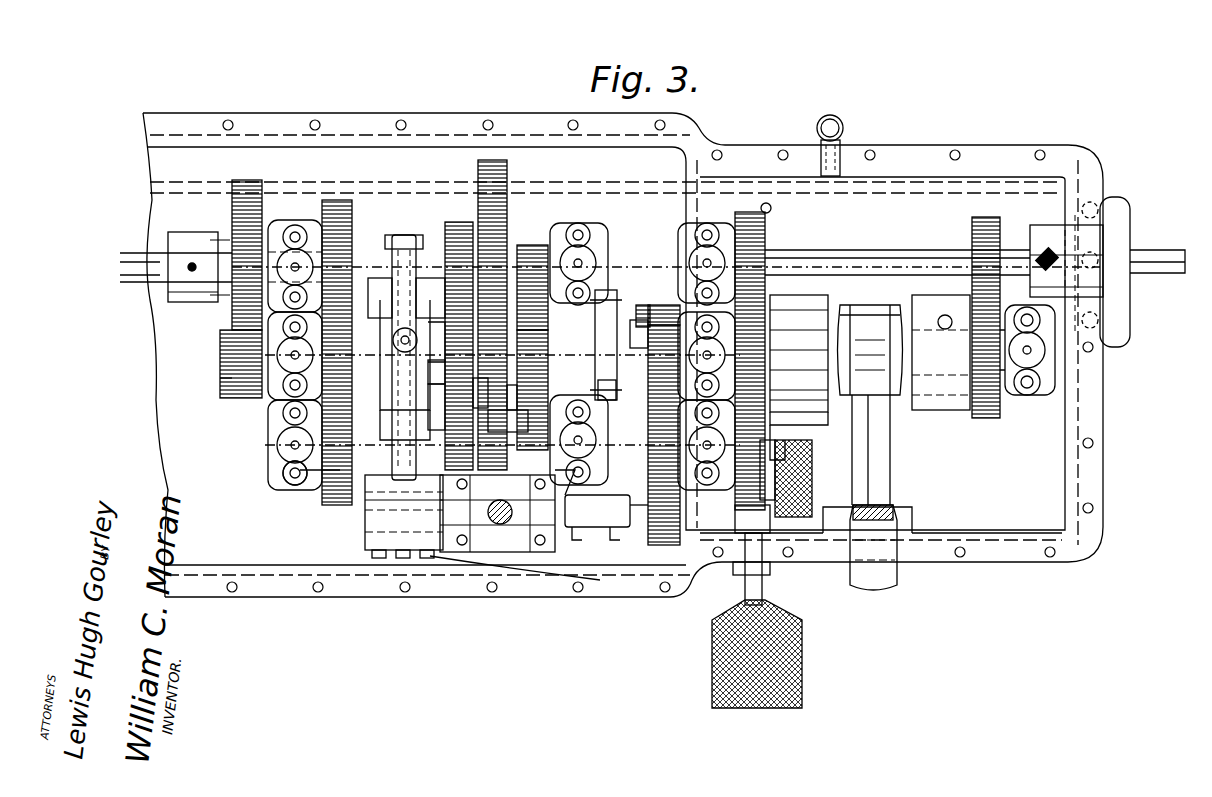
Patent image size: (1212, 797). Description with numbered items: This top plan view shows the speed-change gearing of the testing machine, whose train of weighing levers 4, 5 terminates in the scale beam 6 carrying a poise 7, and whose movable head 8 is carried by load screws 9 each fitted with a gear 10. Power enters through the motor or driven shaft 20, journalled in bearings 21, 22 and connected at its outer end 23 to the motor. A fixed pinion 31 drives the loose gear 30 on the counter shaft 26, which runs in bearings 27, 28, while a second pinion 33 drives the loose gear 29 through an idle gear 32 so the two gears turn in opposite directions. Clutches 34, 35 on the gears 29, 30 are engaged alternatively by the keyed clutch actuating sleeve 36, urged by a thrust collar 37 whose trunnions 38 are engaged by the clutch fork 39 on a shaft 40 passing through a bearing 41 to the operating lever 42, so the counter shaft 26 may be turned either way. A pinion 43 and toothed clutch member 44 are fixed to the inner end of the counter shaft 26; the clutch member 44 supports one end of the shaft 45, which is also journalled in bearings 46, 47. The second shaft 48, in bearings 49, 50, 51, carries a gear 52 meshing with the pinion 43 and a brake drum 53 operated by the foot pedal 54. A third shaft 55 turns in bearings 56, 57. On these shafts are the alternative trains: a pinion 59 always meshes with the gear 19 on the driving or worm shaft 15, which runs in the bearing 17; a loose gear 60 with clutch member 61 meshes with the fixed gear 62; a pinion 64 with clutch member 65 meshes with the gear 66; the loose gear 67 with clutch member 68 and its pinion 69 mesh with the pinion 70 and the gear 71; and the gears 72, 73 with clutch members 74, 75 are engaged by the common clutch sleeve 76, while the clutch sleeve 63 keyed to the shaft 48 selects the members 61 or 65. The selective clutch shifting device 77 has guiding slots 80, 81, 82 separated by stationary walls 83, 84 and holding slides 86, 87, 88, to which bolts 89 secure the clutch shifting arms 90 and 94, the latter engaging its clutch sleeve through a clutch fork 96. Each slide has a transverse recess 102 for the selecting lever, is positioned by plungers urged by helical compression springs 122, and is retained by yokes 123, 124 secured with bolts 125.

The weighing lever 4 is at (405, 113).
The weighing lever 5 is at (345, 113).
The scale beam 6 is at (612, 160).
The poise 7 is at (502, 160).
The movable head or specimen support 8 is at (105, 272).
The load screws 9 is at (155, 362).
The gear 10 is at (232, 440).
The driving or worm shaft 15 is at (122, 262).
The bearing 17 is at (178, 245).
The gear 19 is at (252, 173).
The motor or driven shaft 20 is at (925, 260).
The bearing 21 is at (735, 226).
The bearing 22 is at (1110, 240).
The outer end 23 is at (1168, 273).
The counter shaft 26 is at (1055, 350).
The bearing 27 is at (800, 330).
The bearing 28 is at (1042, 380).
The loose gear 29 is at (799, 353).
The loose gear 30 is at (1000, 385).
The pinion 31 is at (987, 218).
The idle gear 32 is at (795, 445).
The pinion 33 is at (766, 203).
The clutch 34 is at (805, 310).
The clutch 35 is at (930, 305).
The clutch actuating collar or sleeve 36 is at (925, 300).
The thrust collar 37 is at (860, 305).
The trunnions 38 is at (880, 300).
The clutch fork 39 is at (888, 395).
The shaft 40 is at (890, 385).
The bearing 41 is at (912, 515).
The operating lever or handle 42 is at (897, 560).
The pinion 43 is at (660, 312).
The toothed clutch member 44 is at (640, 320).
The shaft 45 is at (220, 355).
The bearing 46 is at (275, 392).
The bearing 47 is at (380, 410).
The second shaft 48 is at (268, 444).
The bearing 49 is at (280, 470).
The bearing 50 is at (568, 412).
The bearing 51 is at (712, 482).
The gear 52 is at (665, 560).
The brake drum 53 is at (800, 515).
The foot pedal 54 is at (760, 690).
The third shaft 55 is at (612, 292).
The bearing 56 is at (290, 230).
The bearing 57 is at (568, 230).
The pinion 59 is at (232, 385).
The gear 60 is at (365, 490).
The clutch member 61 is at (300, 480).
The gear 62 is at (384, 320).
The clutch sleeve 63 is at (440, 400).
The pinion 64 is at (516, 400).
The clutch member 65 is at (446, 374).
The gear 66 is at (440, 322).
The gear 67 is at (540, 238).
The clutch member 68 is at (548, 340).
The pinion 69 is at (488, 392).
The pinion 70 is at (508, 420).
The gear 71 is at (492, 160).
The gear 72 is at (337, 200).
The gear 73 is at (458, 222).
The clutch member 74 is at (378, 278).
The clutch member 75 is at (432, 278).
The clutch sleeve 76 is at (410, 235).
The selective clutch shifting device 77 is at (470, 552).
The guiding slot 80 is at (420, 555).
The guiding slot 81 is at (560, 552).
The guiding slot 82 is at (500, 452).
The stationary wall 83 is at (560, 560).
The stationary wall 84 is at (585, 478).
The slide 86 is at (642, 528).
The slide 87 is at (385, 560).
The slide 88 is at (370, 560).
The bolts 89 is at (565, 520).
The clutch shifting arm 90 is at (617, 387).
The clutch shifting arm 94 is at (380, 500).
The clutch fork 96 is at (395, 515).
The transverse recess 102 is at (505, 552).
The helical compression spring 122 is at (479, 513).
The transverse yoke or strap 123 is at (535, 552).
The transverse yoke or strap 124 is at (452, 552).
The bolts 125 is at (518, 552).